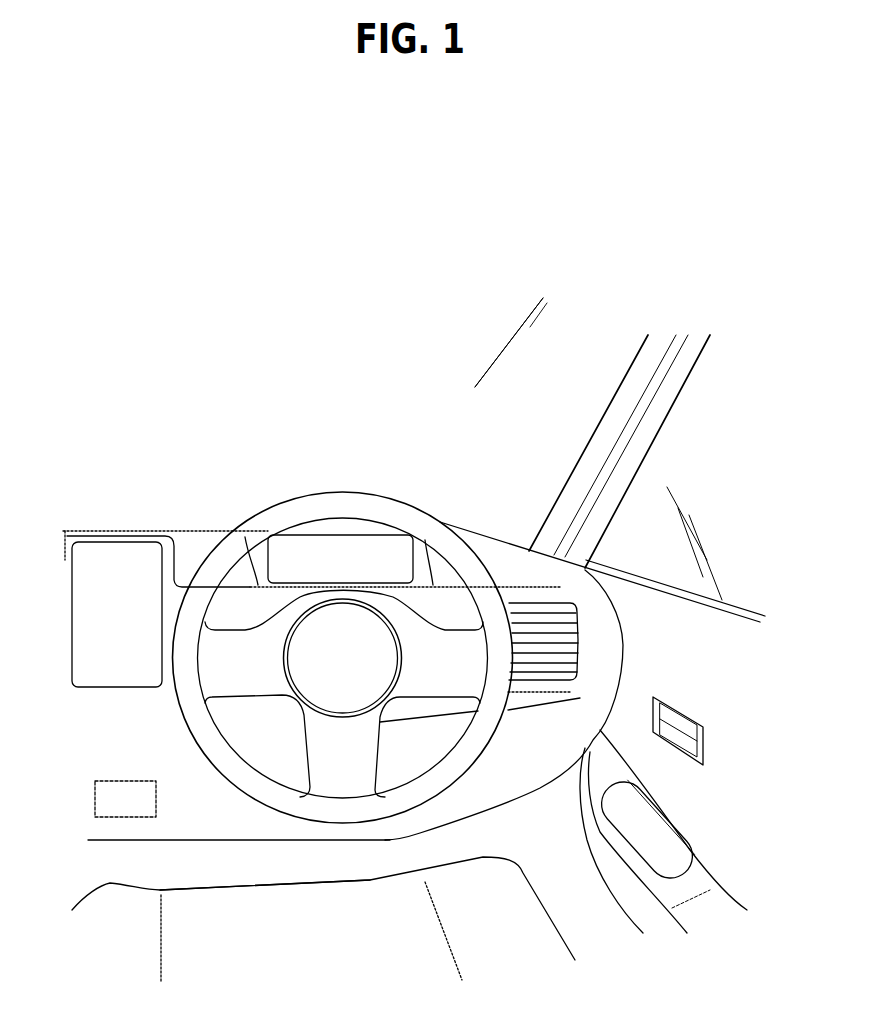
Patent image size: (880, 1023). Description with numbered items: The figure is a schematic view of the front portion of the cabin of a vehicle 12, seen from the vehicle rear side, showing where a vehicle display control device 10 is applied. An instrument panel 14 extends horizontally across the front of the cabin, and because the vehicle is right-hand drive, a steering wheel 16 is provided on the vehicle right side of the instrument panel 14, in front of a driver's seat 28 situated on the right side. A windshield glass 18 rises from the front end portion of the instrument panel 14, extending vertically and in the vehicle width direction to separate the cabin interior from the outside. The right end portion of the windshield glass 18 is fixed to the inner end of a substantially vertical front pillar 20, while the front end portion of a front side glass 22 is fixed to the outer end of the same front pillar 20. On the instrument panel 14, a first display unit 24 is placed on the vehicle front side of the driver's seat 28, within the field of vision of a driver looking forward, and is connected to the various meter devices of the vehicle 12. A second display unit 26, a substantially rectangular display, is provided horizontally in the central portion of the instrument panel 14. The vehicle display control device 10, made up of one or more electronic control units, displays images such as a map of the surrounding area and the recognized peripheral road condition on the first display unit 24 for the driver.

The vehicle display control device 10 is at (127, 780).
The vehicle 12 is at (337, 326).
The instrument panel 14 is at (510, 800).
The steering wheel 16 is at (490, 572).
The windshield glass 18 is at (563, 423).
The front pillar 20 is at (633, 365).
The front side glass 22 is at (728, 560).
The first display unit 24 is at (300, 563).
The second display unit 26 is at (122, 552).
The driver's seat 28 is at (267, 883).